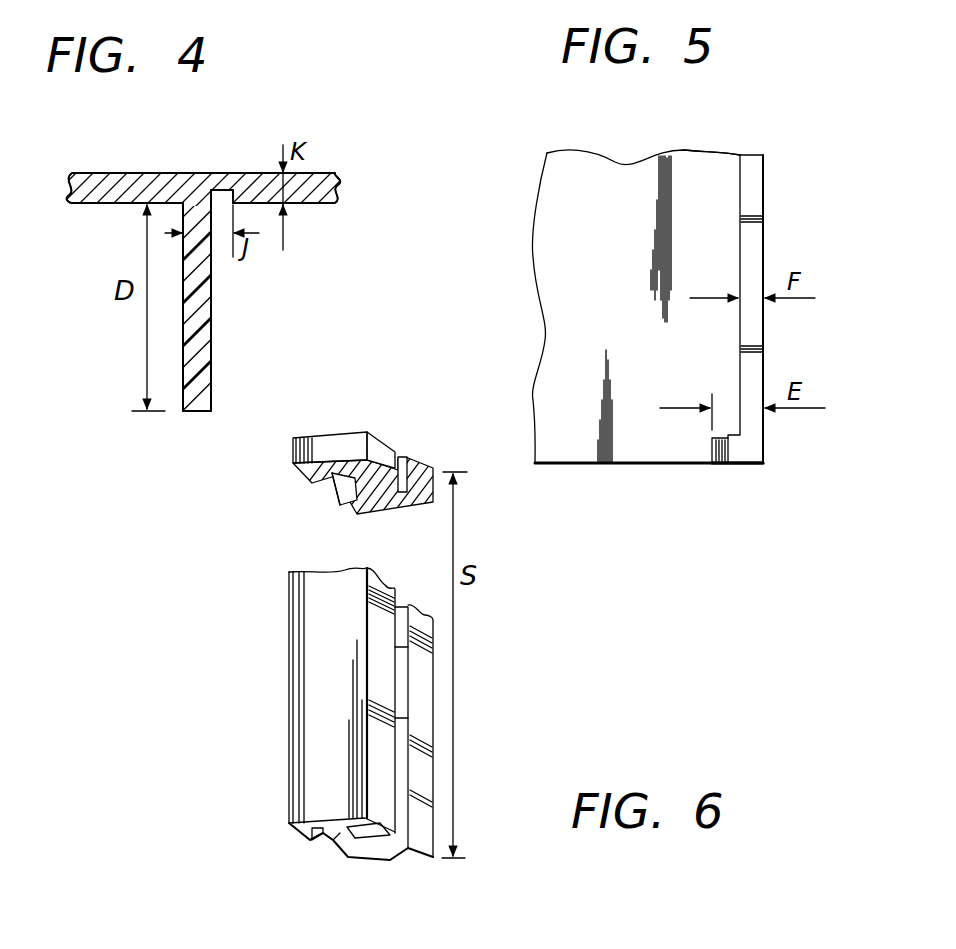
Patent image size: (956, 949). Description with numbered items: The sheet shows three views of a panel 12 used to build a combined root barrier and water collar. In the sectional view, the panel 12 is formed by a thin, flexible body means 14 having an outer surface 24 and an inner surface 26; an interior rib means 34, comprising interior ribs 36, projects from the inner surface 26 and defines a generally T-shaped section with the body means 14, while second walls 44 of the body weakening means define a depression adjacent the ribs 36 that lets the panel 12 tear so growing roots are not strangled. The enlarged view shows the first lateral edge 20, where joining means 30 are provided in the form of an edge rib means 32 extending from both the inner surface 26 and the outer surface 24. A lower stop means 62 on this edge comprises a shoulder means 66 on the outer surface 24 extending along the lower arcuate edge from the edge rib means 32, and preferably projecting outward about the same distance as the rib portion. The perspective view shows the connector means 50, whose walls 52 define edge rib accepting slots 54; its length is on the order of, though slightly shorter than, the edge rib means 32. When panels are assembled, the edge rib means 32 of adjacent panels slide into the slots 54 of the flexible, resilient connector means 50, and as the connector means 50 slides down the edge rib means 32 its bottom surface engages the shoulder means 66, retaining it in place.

In FIG. 4, the panel 12 is at (330, 172).
In FIG. 5, the panel 12 is at (745, 113).
In FIG. 4, the body means 14 is at (143, 172).
In FIG. 5, the body means 14 is at (600, 186).
In FIG. 5, the first lateral edge 20 is at (766, 201).
In FIG. 4, the outer surface 24 is at (88, 172).
In FIG. 5, the outer surface 24 is at (647, 306).
In FIG. 4, the inner surface 26 is at (304, 212).
In FIG. 5, the joining means 30 is at (766, 160).
In FIG. 5, the edge rib means 32 is at (754, 252).
In FIG. 4, the interior rib means 34 is at (213, 383).
In FIG. 4, the interior rib 36 is at (212, 321).
In FIG. 4, the second walls 44 is at (221, 193).
In FIG. 6, the connector means 50 is at (292, 452).
In FIG. 6, the walls 52 is at (387, 858).
In FIG. 6, the edge rib accepting slots 54 is at (402, 718).
In FIG. 5, the lower stop means 62 is at (738, 468).
In FIG. 5, the shoulder means 66 is at (712, 449).